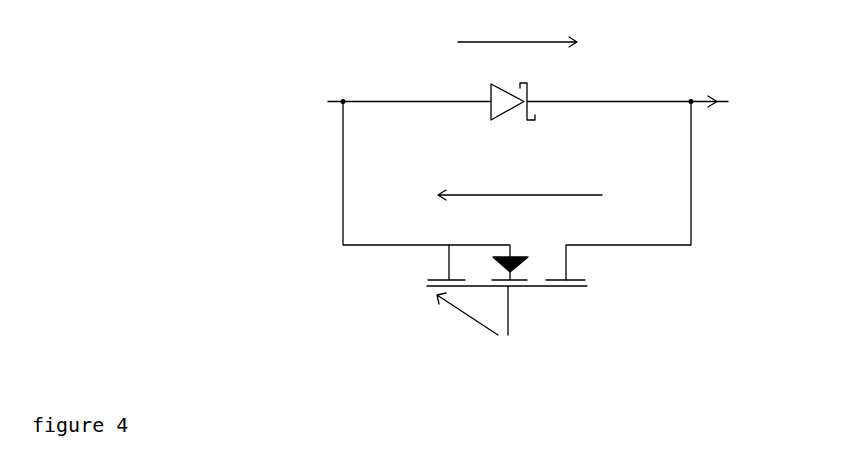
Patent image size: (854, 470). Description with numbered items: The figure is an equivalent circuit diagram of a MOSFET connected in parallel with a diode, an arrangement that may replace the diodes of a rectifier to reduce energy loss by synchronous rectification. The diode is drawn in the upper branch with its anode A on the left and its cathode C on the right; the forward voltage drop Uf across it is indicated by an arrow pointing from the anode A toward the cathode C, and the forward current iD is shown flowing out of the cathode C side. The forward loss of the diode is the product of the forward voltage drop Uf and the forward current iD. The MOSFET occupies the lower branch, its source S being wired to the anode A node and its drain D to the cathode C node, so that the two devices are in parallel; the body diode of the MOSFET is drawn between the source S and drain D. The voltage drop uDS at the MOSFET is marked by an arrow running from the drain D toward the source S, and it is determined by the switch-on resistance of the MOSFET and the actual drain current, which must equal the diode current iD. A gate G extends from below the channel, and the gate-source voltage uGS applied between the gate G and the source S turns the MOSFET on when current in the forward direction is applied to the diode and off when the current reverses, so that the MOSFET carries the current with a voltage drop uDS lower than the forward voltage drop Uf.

The anode A is at (493, 98).
The cathode C is at (561, 87).
The source S is at (446, 249).
The drain D is at (574, 249).
The gate G is at (507, 310).
The forward voltage drop Uf is at (517, 33).
The forward current iD is at (716, 92).
The drain-source voltage drop uDS is at (520, 186).
The gate-source voltage uGS is at (467, 316).